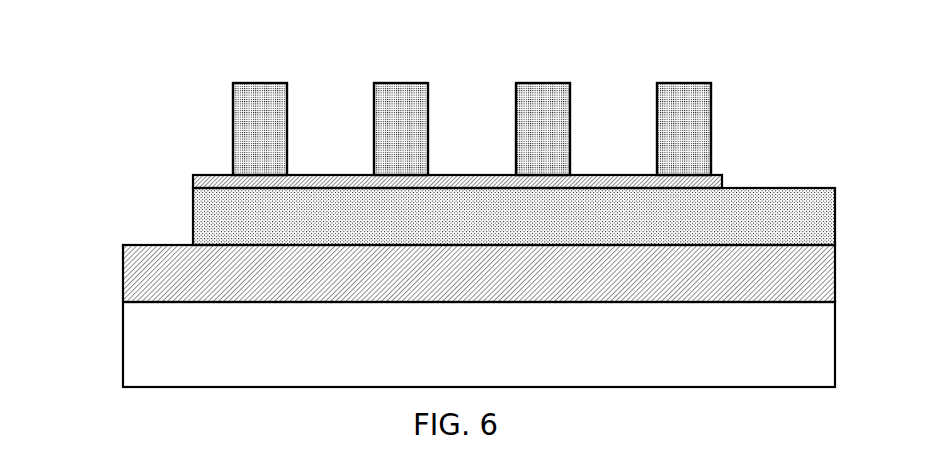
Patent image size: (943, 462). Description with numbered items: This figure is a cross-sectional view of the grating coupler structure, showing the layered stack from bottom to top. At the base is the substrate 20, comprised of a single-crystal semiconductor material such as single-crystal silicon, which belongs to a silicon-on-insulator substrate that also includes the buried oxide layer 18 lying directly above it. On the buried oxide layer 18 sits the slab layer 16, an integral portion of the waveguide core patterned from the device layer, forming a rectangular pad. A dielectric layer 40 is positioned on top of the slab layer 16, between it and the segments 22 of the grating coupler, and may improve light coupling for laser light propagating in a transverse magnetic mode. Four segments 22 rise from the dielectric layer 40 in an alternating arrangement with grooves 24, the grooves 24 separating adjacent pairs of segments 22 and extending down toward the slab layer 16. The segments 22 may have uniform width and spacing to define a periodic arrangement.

The slab layer 16 is at (230, 220).
The buried oxide layer 18 is at (165, 270).
The substrate 20 is at (158, 369).
The segments 22 is at (260, 143).
The grooves 24 is at (287, 63).
The dielectric layer 40 is at (218, 182).